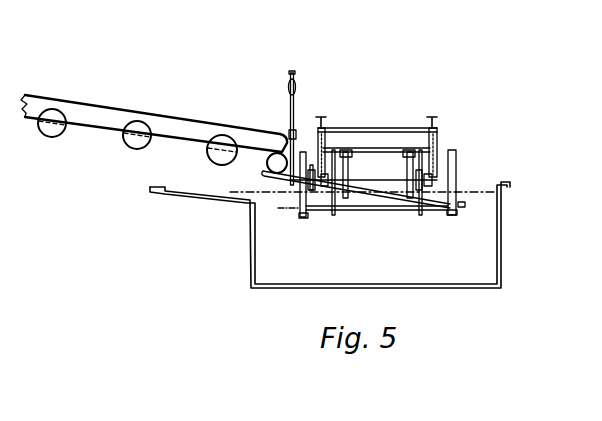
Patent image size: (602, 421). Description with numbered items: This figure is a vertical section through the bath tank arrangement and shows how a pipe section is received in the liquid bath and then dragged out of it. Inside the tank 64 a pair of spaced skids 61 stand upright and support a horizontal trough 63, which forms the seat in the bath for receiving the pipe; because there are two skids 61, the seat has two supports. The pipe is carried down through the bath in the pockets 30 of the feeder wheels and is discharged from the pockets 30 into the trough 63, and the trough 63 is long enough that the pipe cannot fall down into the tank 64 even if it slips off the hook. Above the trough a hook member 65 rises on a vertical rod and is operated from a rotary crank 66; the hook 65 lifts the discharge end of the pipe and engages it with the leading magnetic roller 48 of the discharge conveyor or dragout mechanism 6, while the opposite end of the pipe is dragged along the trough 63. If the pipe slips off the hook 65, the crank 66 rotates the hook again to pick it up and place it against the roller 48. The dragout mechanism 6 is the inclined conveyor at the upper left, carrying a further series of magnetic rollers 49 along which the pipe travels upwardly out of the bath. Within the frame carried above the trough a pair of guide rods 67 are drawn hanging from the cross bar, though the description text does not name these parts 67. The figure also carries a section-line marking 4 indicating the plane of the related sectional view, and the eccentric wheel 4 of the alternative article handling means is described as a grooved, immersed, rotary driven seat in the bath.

The discharge conveyor or dragout mechanism 6 is at (107, 110).
The magnetic rollers 49 is at (217, 140).
The first magnetic roller 48 is at (272, 153).
The hook member 65 is at (295, 122).
The rotary crank 66 is at (289, 84).
The eccentric wheel 4 is at (349, 69).
The guide rods 67 is at (403, 174).
The pockets 30 is at (333, 215).
The skids 61 is at (302, 218).
The trough 63 is at (358, 211).
The tank 64 is at (502, 244).